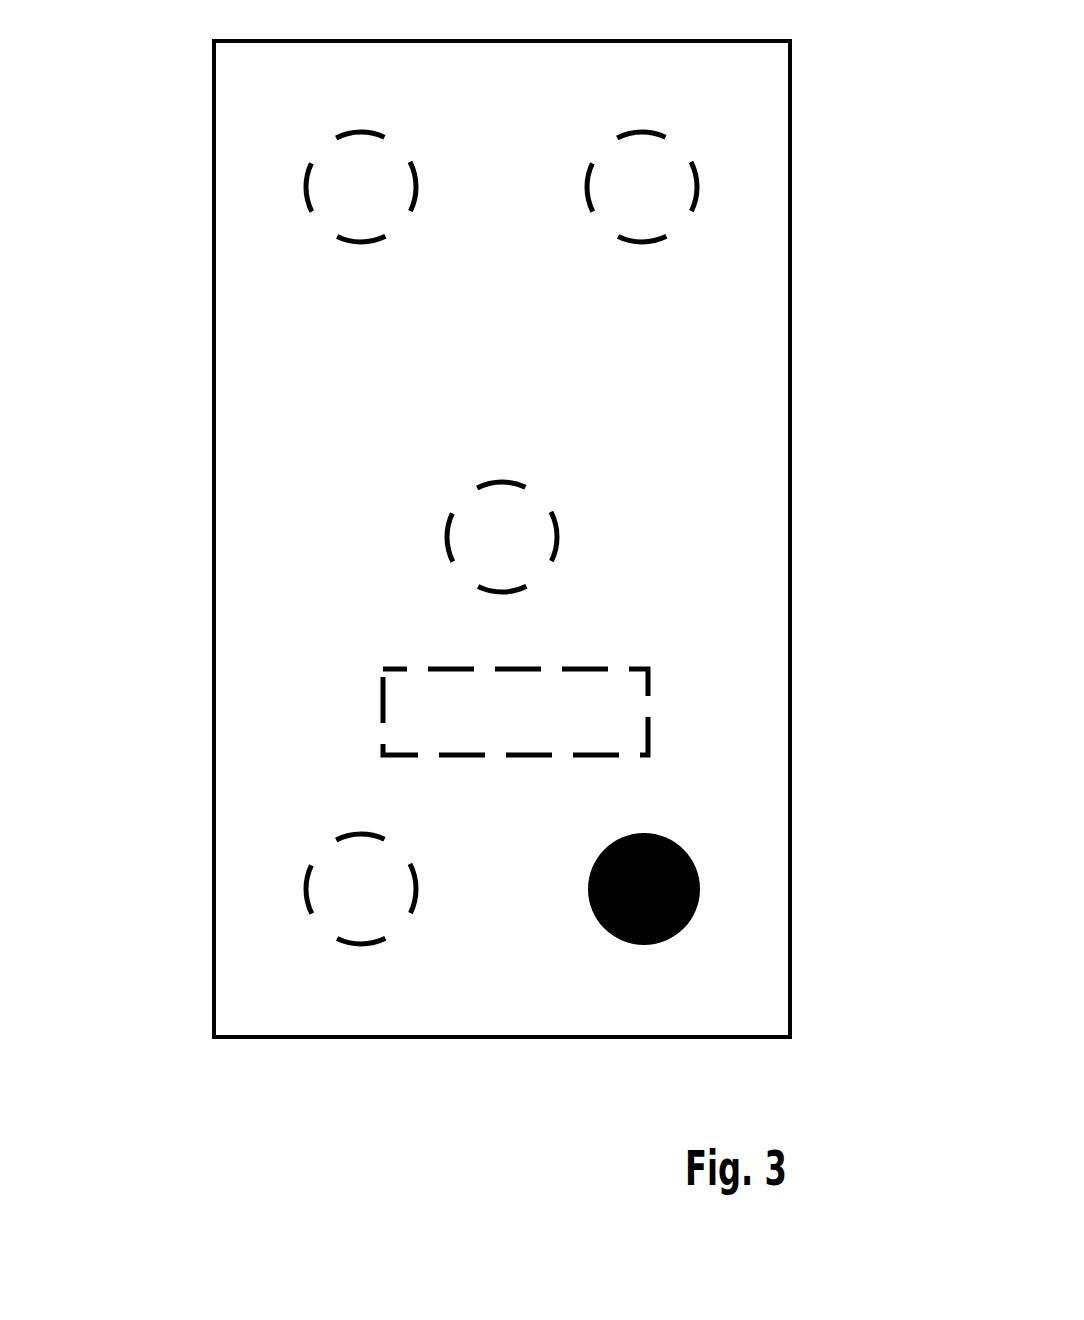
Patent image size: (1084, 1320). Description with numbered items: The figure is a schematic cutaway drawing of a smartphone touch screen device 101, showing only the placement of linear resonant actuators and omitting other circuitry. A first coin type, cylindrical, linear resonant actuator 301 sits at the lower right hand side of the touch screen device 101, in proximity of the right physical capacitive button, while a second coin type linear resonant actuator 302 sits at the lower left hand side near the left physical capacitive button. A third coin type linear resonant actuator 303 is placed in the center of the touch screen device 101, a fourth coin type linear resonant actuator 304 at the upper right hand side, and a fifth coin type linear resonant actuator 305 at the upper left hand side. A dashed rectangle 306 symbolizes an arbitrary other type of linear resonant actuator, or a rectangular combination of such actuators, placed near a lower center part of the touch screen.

The touch screen device 101 is at (793, 96).
The first coin type linear resonant actuator 301 is at (693, 863).
The second coin type linear resonant actuator 302 is at (357, 920).
The third coin type linear resonant actuator 303 is at (542, 528).
The fourth coin type linear resonant actuator 304 is at (670, 197).
The fifth coin type linear resonant actuator 305 is at (327, 205).
The other type of linear resonant actuator 306 is at (387, 710).